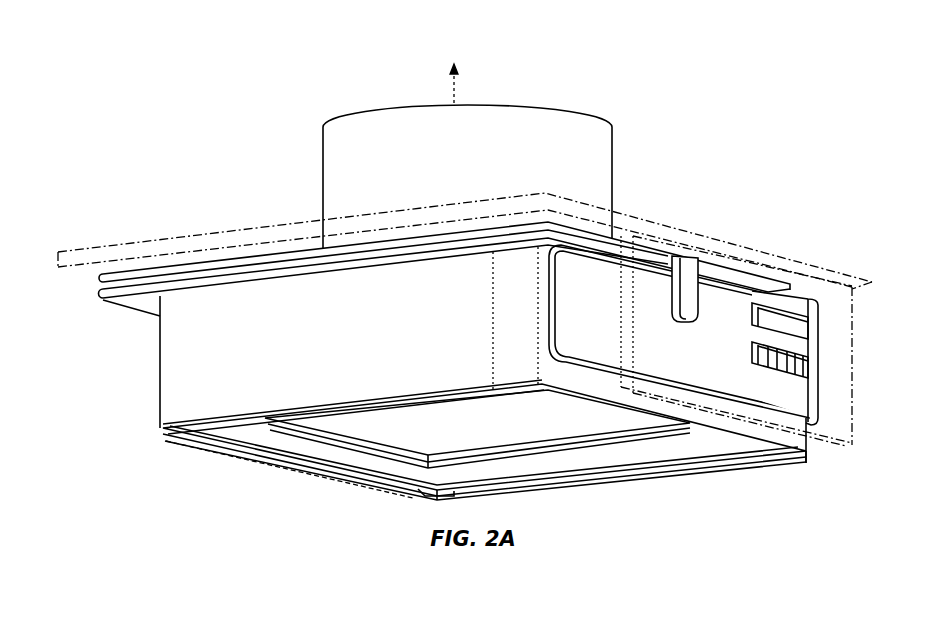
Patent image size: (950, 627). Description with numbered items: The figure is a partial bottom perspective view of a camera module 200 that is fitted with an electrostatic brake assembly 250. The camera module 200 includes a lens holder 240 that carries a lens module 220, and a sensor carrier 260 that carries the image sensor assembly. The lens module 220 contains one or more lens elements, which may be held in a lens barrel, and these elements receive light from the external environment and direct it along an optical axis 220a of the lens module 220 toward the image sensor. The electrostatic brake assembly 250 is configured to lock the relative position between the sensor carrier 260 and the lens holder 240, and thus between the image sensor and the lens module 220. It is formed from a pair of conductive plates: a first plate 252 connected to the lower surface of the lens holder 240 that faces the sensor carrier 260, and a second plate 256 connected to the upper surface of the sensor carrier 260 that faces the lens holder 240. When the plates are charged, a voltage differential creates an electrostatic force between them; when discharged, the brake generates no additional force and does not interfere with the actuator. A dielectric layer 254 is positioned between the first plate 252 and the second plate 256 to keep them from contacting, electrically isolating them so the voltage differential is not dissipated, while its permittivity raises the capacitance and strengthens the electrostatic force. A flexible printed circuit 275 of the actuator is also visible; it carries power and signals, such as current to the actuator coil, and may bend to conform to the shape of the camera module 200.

The camera module 200 is at (248, 57).
The lens module 220 is at (614, 183).
The optical axis 220a is at (458, 86).
The lens holder 240 is at (873, 281).
The electrostatic brake assembly 250 is at (404, 304).
The first plate 252 is at (101, 279).
The dielectric layer 254 is at (101, 293).
The second plate 256 is at (122, 307).
The sensor carrier 260 is at (160, 400).
The flexible printed circuit 275 is at (806, 395).